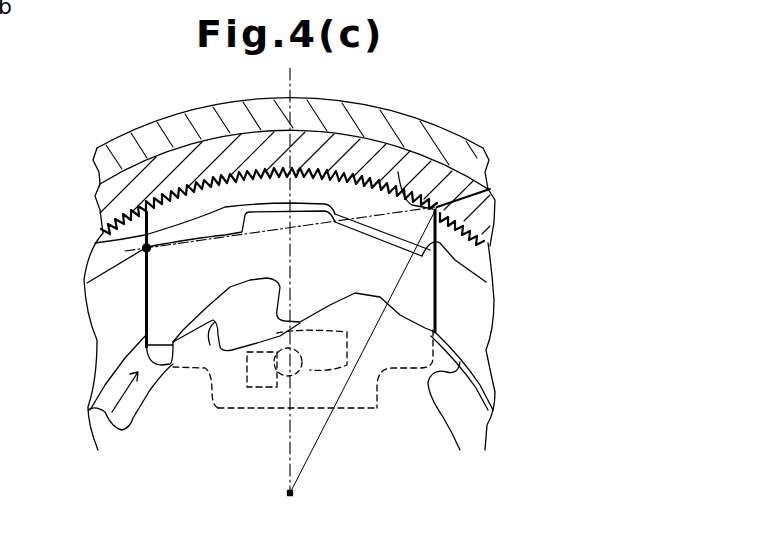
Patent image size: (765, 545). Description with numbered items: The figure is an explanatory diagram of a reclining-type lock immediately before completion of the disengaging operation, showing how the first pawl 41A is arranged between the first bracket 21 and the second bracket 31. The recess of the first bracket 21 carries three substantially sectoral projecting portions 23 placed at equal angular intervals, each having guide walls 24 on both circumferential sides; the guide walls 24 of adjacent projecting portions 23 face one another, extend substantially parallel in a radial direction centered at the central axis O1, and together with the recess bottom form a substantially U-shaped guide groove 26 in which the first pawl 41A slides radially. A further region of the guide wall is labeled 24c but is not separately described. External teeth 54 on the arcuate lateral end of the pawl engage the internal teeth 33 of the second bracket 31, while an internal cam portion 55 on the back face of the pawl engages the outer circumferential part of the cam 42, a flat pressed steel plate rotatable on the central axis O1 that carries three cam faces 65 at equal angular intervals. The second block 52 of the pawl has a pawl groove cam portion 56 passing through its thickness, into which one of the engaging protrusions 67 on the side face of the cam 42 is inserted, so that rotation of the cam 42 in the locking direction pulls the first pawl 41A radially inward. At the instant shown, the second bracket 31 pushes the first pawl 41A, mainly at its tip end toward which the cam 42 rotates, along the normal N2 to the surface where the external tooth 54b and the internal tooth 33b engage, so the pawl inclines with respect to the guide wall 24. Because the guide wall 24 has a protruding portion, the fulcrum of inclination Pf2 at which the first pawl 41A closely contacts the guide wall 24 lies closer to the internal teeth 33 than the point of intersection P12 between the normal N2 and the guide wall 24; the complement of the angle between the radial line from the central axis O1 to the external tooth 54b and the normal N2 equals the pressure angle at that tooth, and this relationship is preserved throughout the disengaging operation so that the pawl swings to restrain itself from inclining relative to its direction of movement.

The first bracket 21 is at (167, 127).
The second bracket 31 is at (375, 147).
The internal teeth 33 is at (322, 170).
The internal tooth 33b is at (405, 253).
The projecting portions 23 is at (101, 235).
The guide walls 24 is at (448, 327).
The pawl portion 24c is at (20, 271).
The guide groove 26 is at (14, 61).
The cam 42 is at (430, 397).
The second block 52 is at (402, 333).
The first pawl 41A is at (358, 385).
The external teeth 54 is at (205, 185).
The external tooth 54b is at (437, 208).
The internal cam portion 55 is at (236, 342).
The pawl groove cam portion 56 is at (236, 409).
The cam faces 65 is at (226, 321).
The engaging protrusions 67 is at (272, 410).
The central axis O1 is at (295, 493).
The fulcrum of inclination Pf2 is at (143, 249).
The point of intersection P12 is at (145, 255).
The normal N2 is at (165, 253).